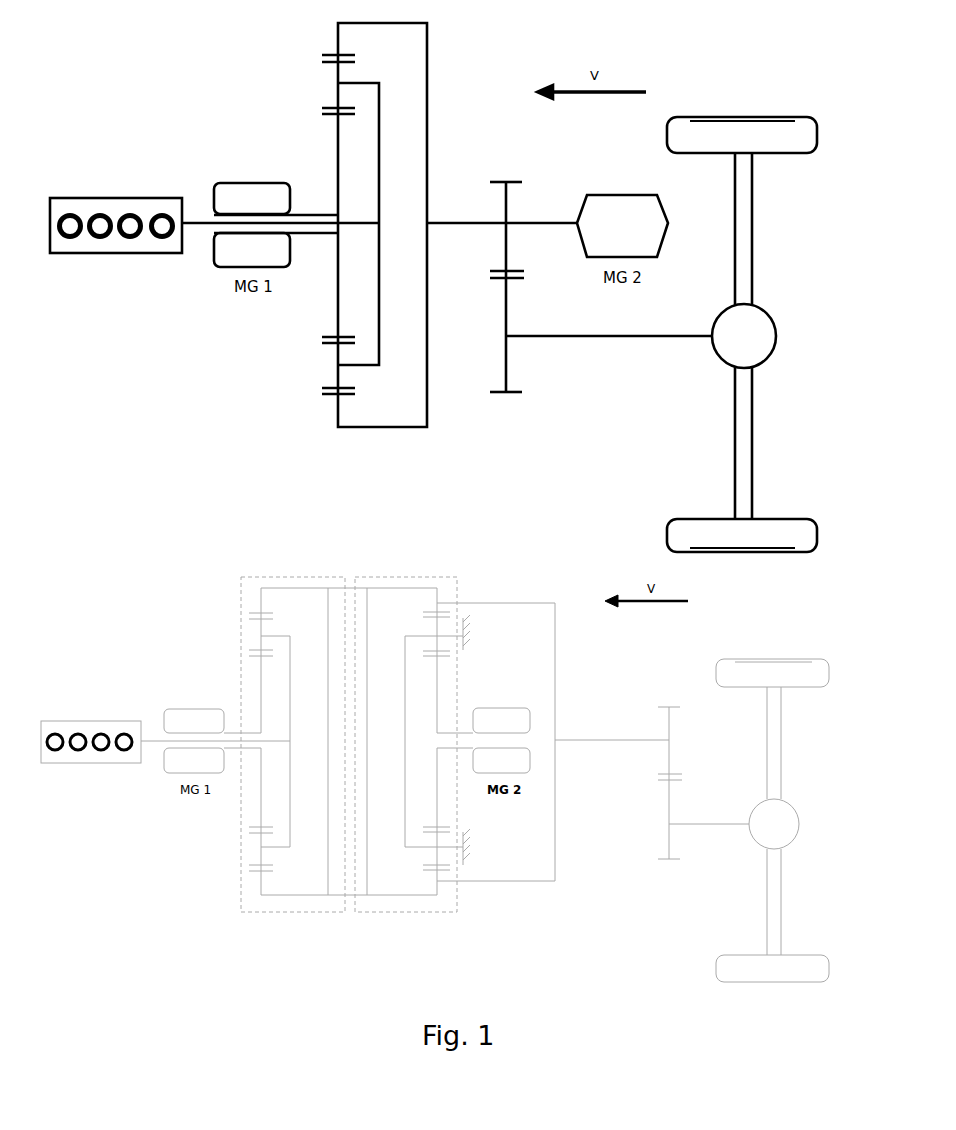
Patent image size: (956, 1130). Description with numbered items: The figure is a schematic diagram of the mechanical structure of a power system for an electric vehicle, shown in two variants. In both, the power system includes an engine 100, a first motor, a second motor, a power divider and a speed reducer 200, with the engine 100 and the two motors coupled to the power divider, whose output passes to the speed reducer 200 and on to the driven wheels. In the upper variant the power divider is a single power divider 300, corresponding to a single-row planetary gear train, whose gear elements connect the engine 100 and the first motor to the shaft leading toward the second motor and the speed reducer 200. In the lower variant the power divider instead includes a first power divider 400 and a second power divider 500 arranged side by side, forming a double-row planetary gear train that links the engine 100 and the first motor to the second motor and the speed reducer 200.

The engine 100 is at (116, 197).
The speed reducer 200 is at (776, 330).
The single power divider 300 is at (338, 427).
The first power divider 400 is at (241, 898).
The second power divider 500 is at (457, 898).